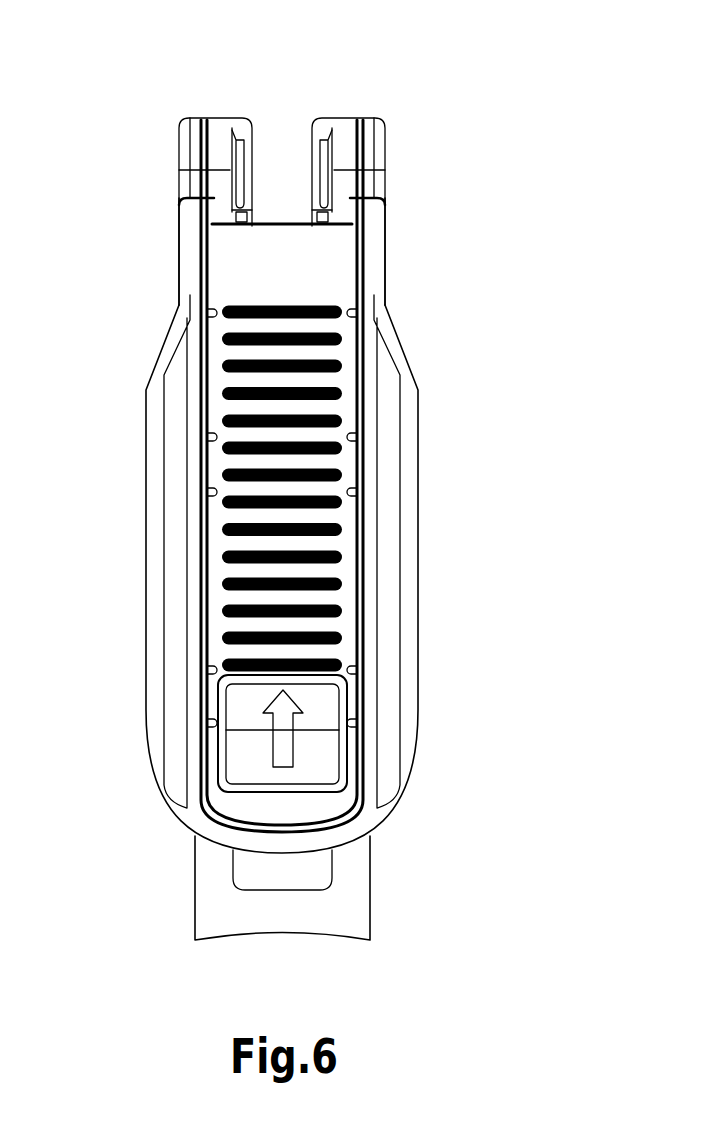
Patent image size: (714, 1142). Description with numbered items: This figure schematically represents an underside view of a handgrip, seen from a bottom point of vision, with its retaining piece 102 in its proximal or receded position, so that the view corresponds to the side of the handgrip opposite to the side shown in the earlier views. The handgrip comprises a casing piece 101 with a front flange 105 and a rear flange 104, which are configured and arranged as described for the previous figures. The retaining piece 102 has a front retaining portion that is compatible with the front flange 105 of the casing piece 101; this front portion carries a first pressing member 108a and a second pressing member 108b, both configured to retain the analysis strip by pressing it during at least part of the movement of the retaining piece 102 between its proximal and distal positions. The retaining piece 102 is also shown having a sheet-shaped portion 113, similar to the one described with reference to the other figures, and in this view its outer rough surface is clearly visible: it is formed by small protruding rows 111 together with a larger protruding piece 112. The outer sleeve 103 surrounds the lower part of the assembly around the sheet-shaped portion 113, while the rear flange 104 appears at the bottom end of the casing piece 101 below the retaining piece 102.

The casing piece 101 is at (128, 793).
The retaining piece 102 is at (283, 111).
The outer sleeve 103 is at (407, 585).
The rear flange 104 is at (335, 903).
The front flange 105 is at (376, 182).
The first pressing member 108a is at (338, 150).
The second pressing member 108b is at (242, 153).
The small protruding rows 111 is at (222, 584).
The larger protruding piece 112 is at (318, 762).
The sheet-shaped portion 113 is at (330, 273).